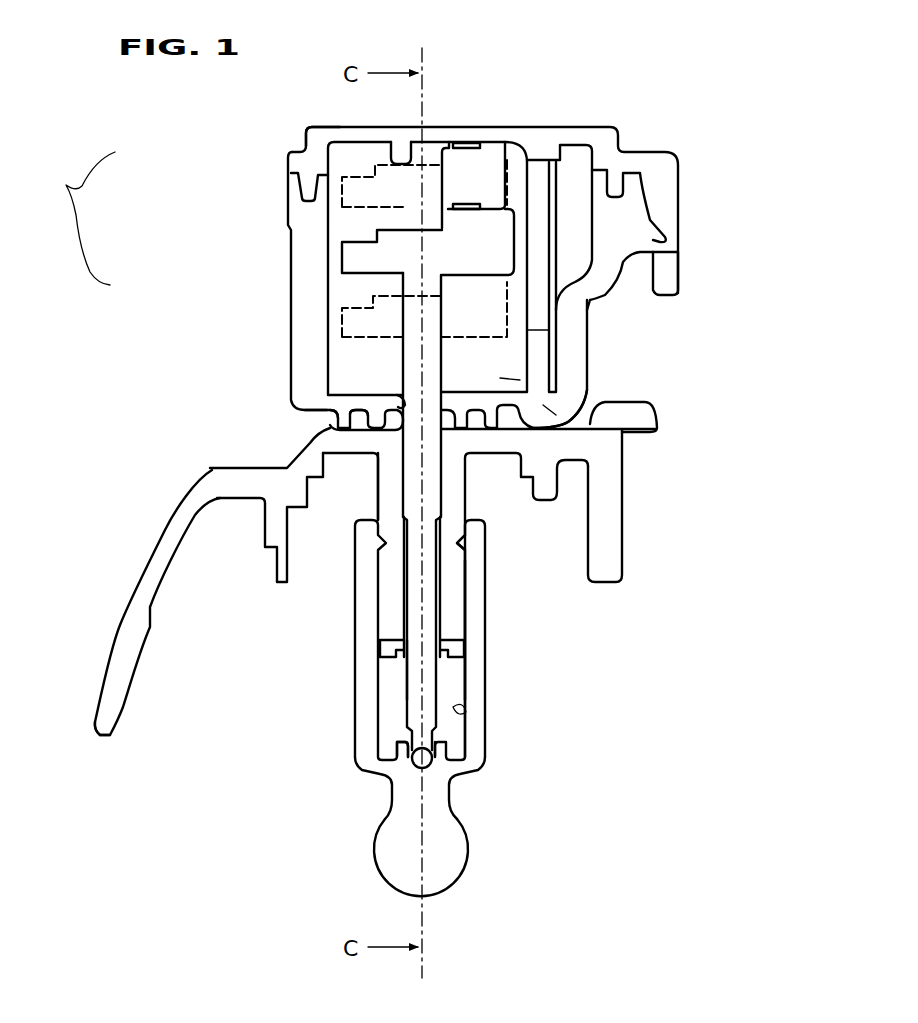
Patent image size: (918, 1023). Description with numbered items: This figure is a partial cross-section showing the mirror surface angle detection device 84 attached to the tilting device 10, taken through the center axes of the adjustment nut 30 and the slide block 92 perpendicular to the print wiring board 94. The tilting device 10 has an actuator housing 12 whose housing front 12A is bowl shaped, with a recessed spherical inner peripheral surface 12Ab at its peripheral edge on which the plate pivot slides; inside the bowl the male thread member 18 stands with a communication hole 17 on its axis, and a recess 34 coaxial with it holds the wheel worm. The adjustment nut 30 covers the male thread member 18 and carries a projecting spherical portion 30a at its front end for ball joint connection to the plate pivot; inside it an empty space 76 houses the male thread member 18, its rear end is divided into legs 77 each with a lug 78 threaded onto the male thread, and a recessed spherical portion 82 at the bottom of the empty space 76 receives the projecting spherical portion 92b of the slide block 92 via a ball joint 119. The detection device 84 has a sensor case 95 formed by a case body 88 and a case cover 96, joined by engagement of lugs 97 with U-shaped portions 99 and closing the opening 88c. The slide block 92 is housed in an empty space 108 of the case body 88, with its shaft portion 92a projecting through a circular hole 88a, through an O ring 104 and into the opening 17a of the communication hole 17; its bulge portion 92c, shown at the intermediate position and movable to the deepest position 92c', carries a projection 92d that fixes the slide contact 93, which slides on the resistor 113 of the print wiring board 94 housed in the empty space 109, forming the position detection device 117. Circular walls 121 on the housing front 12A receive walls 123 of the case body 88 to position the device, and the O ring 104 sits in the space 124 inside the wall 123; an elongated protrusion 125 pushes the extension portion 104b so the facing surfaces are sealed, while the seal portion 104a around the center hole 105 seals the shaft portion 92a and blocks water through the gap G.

The tilting device 10 is at (641, 506).
The actuator housing 12 is at (116, 634).
The housing front 12A is at (158, 557).
The inner peripheral surface 12Ab is at (130, 680).
The communication hole 17 is at (403, 586).
The opening 17a is at (380, 505).
The male thread member 18 is at (455, 600).
The adjustment nut 30 is at (363, 698).
The projecting spherical portion 30a is at (447, 843).
The recess 34 is at (535, 488).
The empty space 76 is at (460, 712).
The leg 77 is at (473, 583).
The lug 78 is at (465, 546).
The recessed spherical portion 82 is at (407, 758).
The mirror surface angle detection device 84 is at (706, 142).
The case body 88 is at (310, 283).
The circular hole 88a is at (400, 398).
The opening 88c is at (290, 164).
The slide block 92 is at (442, 671).
The shaft portion 92a is at (410, 665).
The projecting spherical portion 92b is at (413, 760).
The bulge portion 92c is at (343, 242).
The bulge portion deepest position 92c' is at (337, 191).
The projection 92d is at (466, 204).
The slide contact 93 is at (533, 232).
The print wiring board 94 is at (533, 333).
The sensor case 95 is at (71, 218).
The case cover 96 is at (300, 134).
The lug 97 is at (656, 242).
The U-shaped portion 99 is at (678, 212).
The O ring 104 is at (458, 430).
The seal portion 104a is at (335, 467).
The extension portion 104b is at (310, 445).
The center hole 105 is at (520, 432).
The empty space 108 is at (345, 228).
The empty space 109 is at (567, 220).
The resistor 113 is at (500, 380).
The position detection device 117 is at (560, 190).
The ball joint 119 is at (437, 768).
The wall 121 is at (392, 412).
The wall 123 is at (365, 414).
The space 124 is at (590, 434).
The elongated protrusion 125 is at (342, 412).
The gap G is at (545, 405).